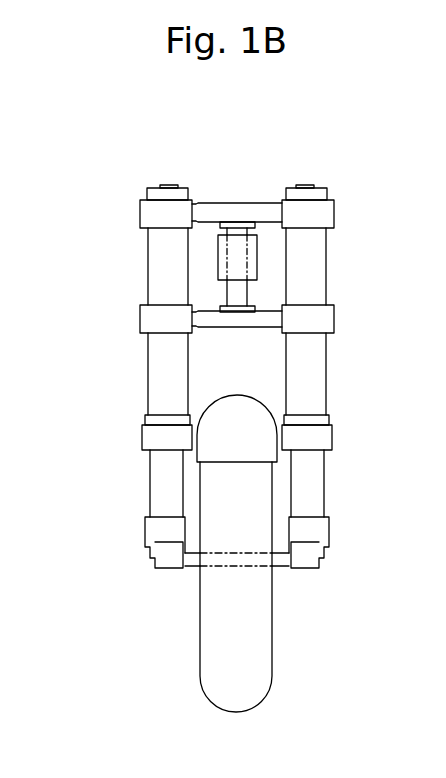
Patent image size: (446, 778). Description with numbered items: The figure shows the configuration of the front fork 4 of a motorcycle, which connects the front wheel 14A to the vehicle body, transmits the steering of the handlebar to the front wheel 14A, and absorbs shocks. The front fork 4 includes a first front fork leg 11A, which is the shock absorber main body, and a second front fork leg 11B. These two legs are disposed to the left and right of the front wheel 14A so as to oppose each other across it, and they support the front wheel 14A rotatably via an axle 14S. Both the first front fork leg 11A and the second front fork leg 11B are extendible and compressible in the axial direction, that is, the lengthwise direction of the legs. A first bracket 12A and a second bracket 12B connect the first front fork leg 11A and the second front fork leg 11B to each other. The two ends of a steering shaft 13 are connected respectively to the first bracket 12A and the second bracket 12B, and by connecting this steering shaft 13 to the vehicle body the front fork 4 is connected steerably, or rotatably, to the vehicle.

The front fork 4 is at (103, 178).
The first front fork leg 11A is at (148, 398).
The second front fork leg 11B is at (326, 398).
The first bracket 12A is at (334, 215).
The second bracket 12B is at (334, 320).
The steering shaft 13 is at (247, 290).
The front wheel 14A is at (273, 647).
The axle 14S is at (191, 568).